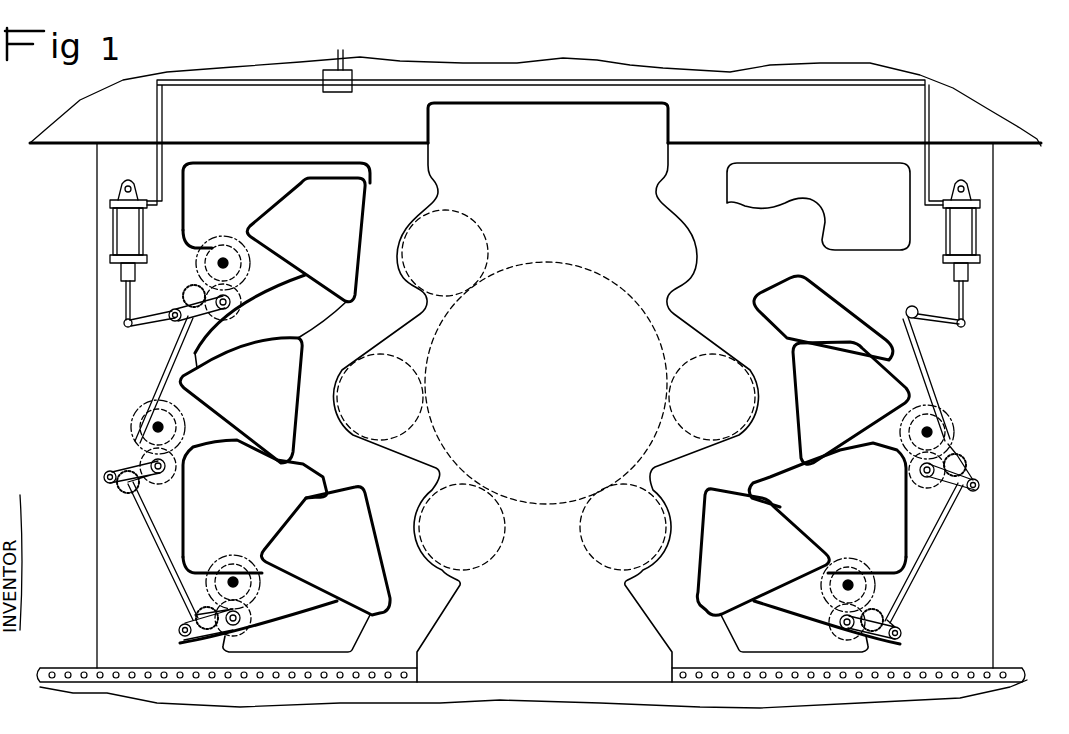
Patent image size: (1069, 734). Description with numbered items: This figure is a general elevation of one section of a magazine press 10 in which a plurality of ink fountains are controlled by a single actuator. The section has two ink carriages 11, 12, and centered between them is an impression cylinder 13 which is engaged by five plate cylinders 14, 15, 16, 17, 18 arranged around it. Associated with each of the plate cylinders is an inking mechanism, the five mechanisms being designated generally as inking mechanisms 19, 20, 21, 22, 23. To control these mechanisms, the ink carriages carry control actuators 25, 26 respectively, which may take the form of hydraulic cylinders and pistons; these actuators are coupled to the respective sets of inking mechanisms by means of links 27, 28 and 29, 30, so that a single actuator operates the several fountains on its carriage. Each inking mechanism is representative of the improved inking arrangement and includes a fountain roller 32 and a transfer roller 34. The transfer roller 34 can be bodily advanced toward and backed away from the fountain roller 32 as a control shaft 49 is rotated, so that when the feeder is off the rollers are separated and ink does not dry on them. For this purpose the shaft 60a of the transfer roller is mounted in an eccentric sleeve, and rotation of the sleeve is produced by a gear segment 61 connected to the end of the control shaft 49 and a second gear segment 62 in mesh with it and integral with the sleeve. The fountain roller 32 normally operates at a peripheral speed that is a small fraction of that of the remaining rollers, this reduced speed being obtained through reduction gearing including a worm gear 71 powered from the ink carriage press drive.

The magazine press 10 is at (630, 70).
The ink carriage 11 is at (96, 386).
The ink carriage 12 is at (994, 388).
The impression cylinder 13 is at (588, 262).
The plate cylinder 14 is at (488, 236).
The plate cylinder 15 is at (380, 352).
The plate cylinder 16 is at (505, 541).
The plate cylinder 17 is at (600, 567).
The plate cylinder 18 is at (700, 437).
The inking mechanism 19 is at (165, 333).
The inking mechanism 20 is at (116, 452).
The inking mechanism 21 is at (182, 617).
The inking mechanism 22 is at (903, 617).
The inking mechanism 23 is at (970, 456).
The control actuator 25 is at (118, 232).
The control actuator 26 is at (980, 234).
The link 27 is at (155, 415).
The link 28 is at (162, 548).
The link 29 is at (933, 384).
The link 30 is at (922, 558).
The fountain roller 32 is at (220, 250).
The transfer roller 34 is at (240, 316).
The control shaft 49 is at (170, 311).
The shaft of the transfer roller 60a is at (238, 308).
The gear segment 61 is at (190, 295).
The second gear segment 62 is at (210, 263).
The worm gear 71 is at (252, 258).